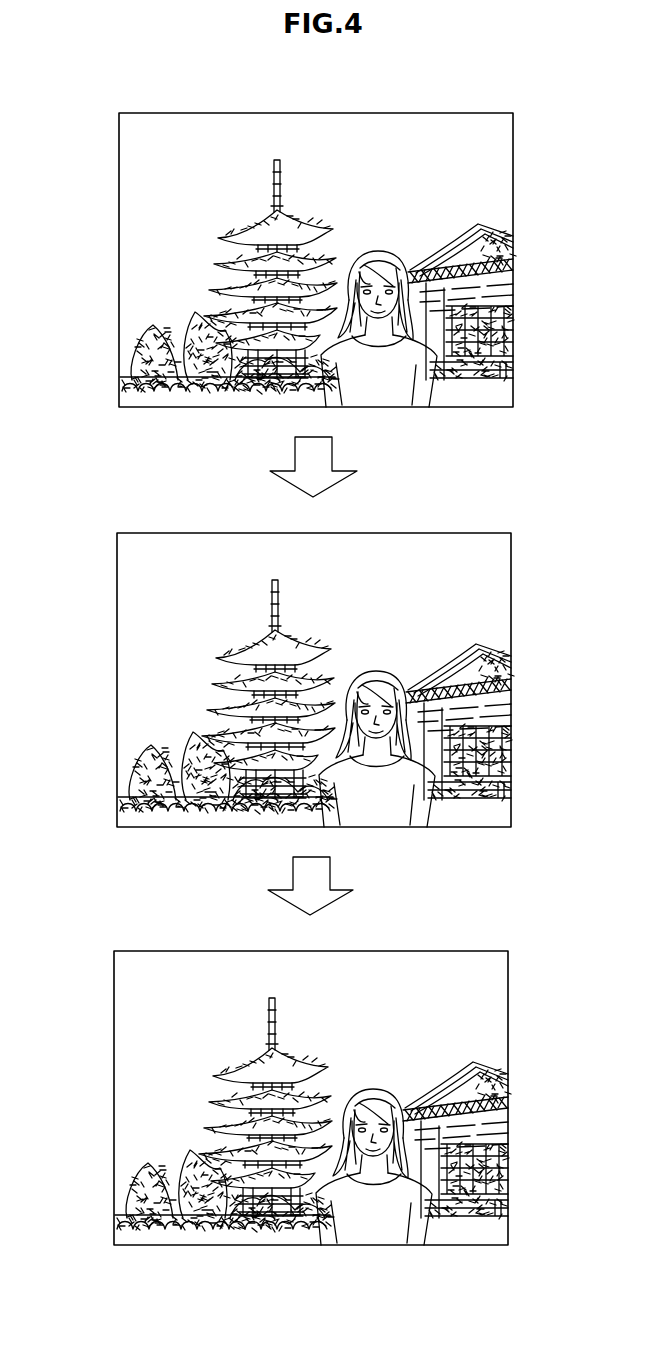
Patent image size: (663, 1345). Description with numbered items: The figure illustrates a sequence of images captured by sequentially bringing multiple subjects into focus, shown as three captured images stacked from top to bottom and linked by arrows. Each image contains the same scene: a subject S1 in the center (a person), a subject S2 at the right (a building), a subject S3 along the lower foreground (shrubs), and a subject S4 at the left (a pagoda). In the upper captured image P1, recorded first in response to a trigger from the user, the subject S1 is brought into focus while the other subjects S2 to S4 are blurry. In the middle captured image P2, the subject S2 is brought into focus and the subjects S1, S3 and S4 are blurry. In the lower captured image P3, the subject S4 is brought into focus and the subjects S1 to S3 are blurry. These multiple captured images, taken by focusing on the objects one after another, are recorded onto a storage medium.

The subject S1 is at (375, 250).
The subject S2 is at (461, 244).
The subject S3 is at (128, 378).
The subject S4 is at (220, 238).
The captured image P1 is at (498, 113).
The captured image P2 is at (496, 533).
The captured image P3 is at (493, 951).